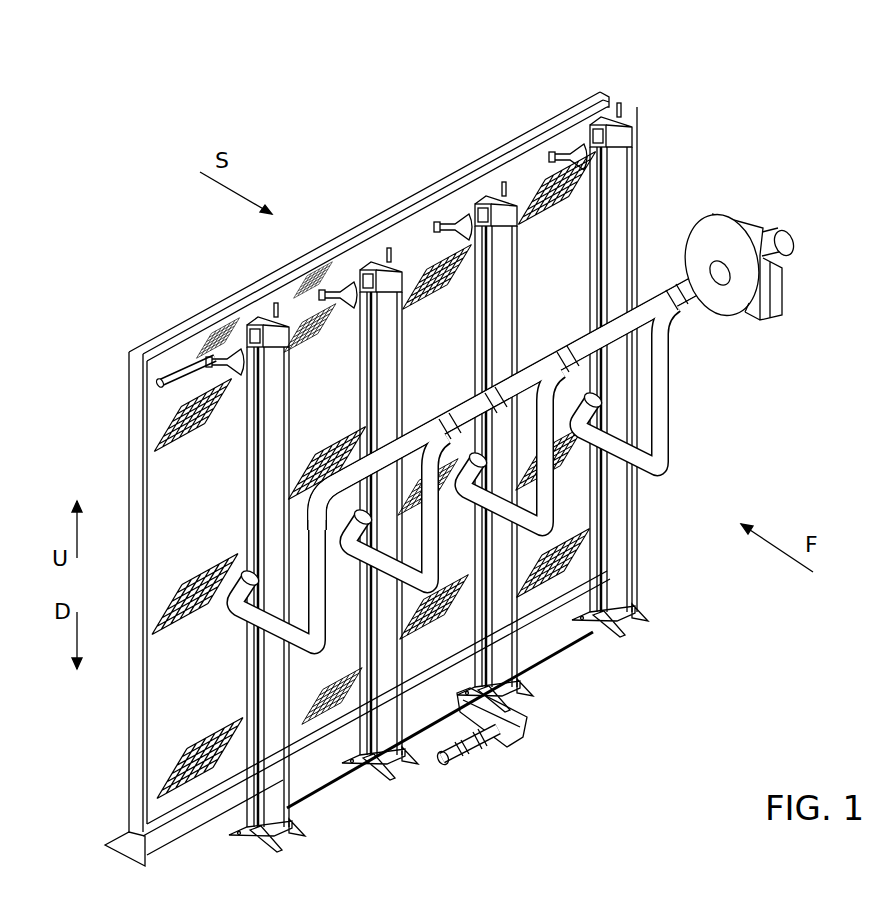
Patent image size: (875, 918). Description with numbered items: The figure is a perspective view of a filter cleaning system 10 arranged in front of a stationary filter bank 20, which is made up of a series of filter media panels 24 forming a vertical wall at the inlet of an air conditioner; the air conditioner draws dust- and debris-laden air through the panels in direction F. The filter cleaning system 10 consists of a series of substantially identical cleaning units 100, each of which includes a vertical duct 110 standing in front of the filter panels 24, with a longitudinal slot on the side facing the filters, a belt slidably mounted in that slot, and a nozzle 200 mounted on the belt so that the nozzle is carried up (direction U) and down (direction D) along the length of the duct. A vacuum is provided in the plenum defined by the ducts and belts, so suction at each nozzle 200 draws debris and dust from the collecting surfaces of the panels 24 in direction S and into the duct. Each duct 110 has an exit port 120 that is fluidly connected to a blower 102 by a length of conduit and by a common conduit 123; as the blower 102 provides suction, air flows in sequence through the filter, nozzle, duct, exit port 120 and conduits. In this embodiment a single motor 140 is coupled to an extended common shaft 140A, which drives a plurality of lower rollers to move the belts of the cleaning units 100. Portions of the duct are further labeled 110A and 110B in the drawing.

The filter cleaning system 10 is at (443, 461).
The filter bank 20 is at (423, 165).
The filter media panels 24 is at (318, 290).
The cleaning unit 100 is at (652, 644).
The blower 102 is at (750, 220).
The vertical duct 110 is at (492, 461).
The post upper portion 110A is at (592, 160).
The post side member 110B is at (630, 200).
The exit port 120 is at (598, 394).
The common conduit 123 is at (650, 297).
The motor 140 is at (467, 763).
The common shaft 140A is at (525, 653).
The nozzle 200 is at (168, 348).